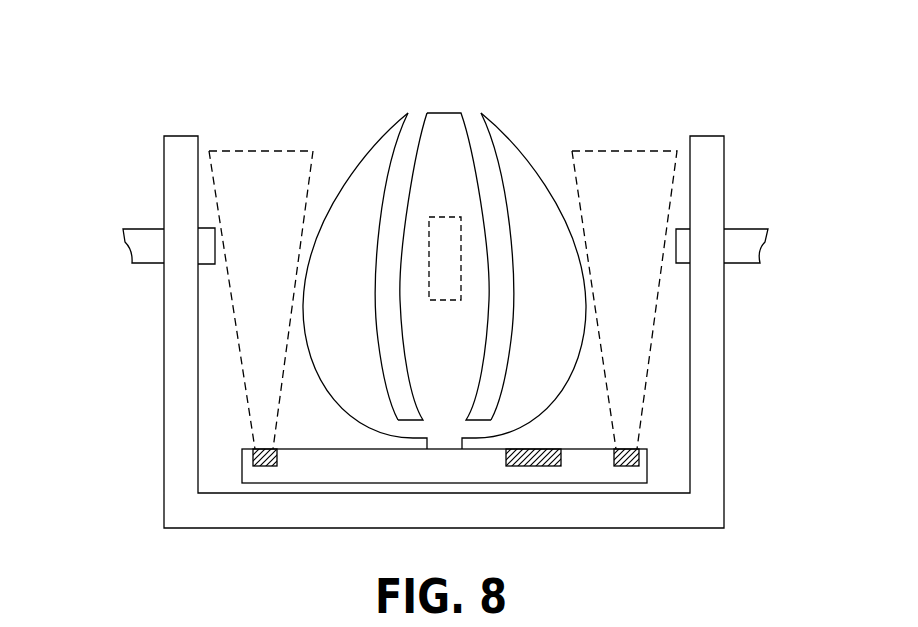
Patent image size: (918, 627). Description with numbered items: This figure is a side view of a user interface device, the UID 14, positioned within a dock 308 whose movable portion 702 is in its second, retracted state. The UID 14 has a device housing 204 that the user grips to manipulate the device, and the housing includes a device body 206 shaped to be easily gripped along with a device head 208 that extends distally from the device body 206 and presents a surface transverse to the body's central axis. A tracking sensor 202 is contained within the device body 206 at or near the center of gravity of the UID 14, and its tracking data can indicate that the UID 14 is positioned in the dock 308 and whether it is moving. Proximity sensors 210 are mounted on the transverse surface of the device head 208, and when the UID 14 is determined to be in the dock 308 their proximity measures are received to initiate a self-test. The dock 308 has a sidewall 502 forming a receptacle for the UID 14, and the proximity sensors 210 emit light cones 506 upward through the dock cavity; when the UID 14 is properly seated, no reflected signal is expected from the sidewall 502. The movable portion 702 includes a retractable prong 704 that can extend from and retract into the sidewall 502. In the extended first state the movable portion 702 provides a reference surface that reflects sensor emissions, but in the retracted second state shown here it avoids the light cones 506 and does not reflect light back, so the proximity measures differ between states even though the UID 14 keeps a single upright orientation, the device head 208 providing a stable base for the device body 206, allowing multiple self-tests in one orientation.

The UID 14 is at (453, 238).
The tracking sensor 202 is at (461, 260).
The device housing 204 is at (363, 155).
The device body 206 is at (523, 158).
The device head 208 is at (330, 466).
The proximity sensors 210 is at (265, 449).
The dock 308 is at (728, 295).
The sidewall 502 is at (499, 327).
The light cones 506 is at (237, 330).
The movable portion 702 is at (145, 245).
The retractable prong 704 is at (743, 235).